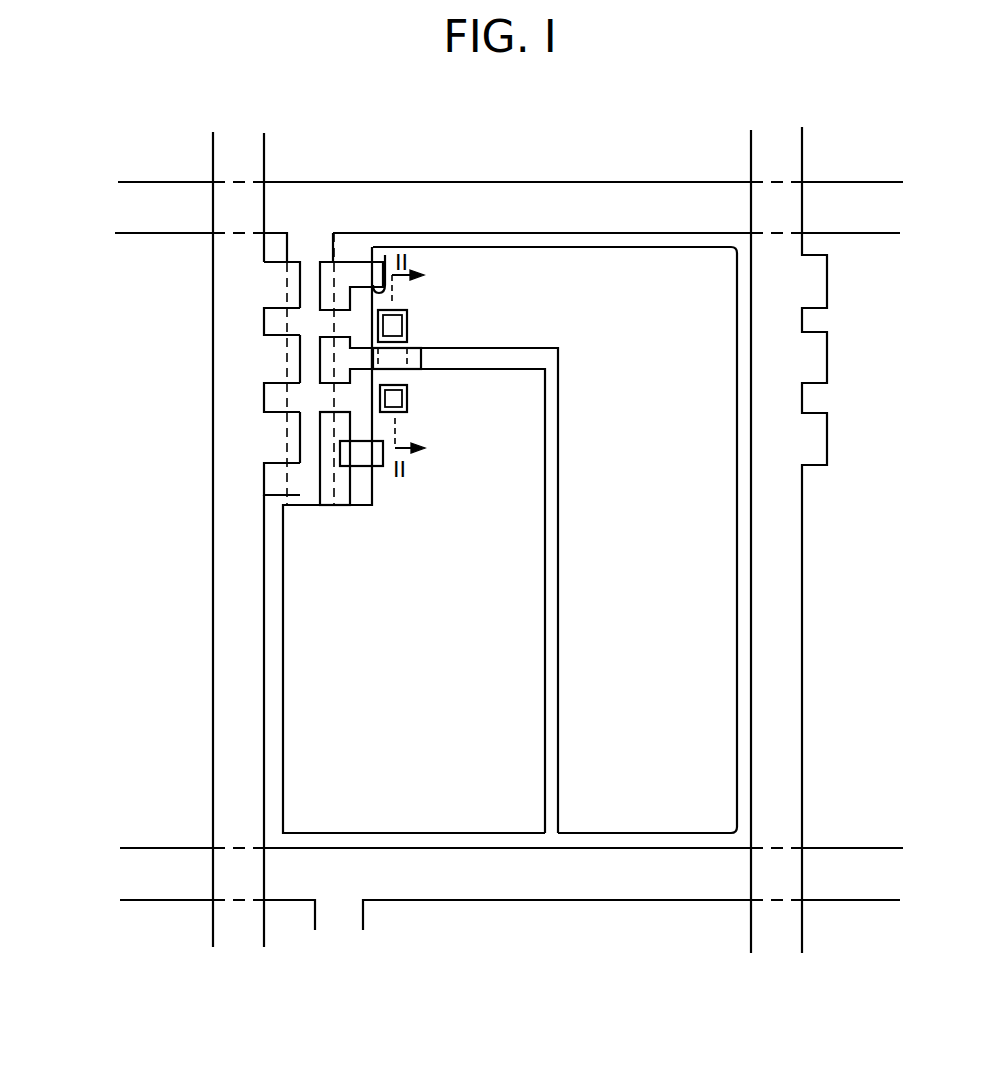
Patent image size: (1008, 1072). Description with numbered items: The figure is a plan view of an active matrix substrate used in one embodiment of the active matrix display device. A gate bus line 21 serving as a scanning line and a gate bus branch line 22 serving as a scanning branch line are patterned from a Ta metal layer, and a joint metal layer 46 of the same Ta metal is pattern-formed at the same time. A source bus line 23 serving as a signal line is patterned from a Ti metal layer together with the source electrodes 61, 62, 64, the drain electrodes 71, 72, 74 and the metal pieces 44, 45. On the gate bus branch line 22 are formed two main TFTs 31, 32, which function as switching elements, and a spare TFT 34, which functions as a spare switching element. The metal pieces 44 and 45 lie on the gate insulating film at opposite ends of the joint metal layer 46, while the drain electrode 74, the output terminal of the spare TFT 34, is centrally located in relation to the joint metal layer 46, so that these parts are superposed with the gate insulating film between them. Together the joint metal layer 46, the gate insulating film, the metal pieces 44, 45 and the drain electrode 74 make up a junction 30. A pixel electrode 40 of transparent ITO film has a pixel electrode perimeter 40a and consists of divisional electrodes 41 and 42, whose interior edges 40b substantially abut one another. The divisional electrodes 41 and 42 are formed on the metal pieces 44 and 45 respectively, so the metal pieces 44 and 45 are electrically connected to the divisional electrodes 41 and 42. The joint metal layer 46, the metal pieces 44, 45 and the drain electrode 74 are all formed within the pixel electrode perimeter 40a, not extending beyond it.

The gate bus line 21 is at (130, 205).
The gate bus branch line 22 is at (323, 482).
The source bus line 23 is at (243, 140).
The junction 30 is at (415, 423).
The TFT 31 is at (300, 447).
The TFT 32 is at (300, 289).
The spare TFT 34 is at (300, 367).
The pixel electrode 40 is at (662, 978).
The pixel electrode perimeter 40a is at (360, 347).
The interior edges 40b is at (558, 346).
The divisional electrode 41 is at (533, 780).
The divisional electrode 42 is at (655, 813).
The metal piece 44 is at (408, 404).
The metal piece 45 is at (407, 328).
The joint metal layer 46 is at (421, 377).
The source electrode 61 is at (275, 435).
The source electrode 62 is at (277, 298).
The source electrode 64 is at (275, 373).
The drain electrode 71 is at (360, 457).
The drain electrode 72 is at (348, 262).
The drain electrode 74 is at (348, 345).